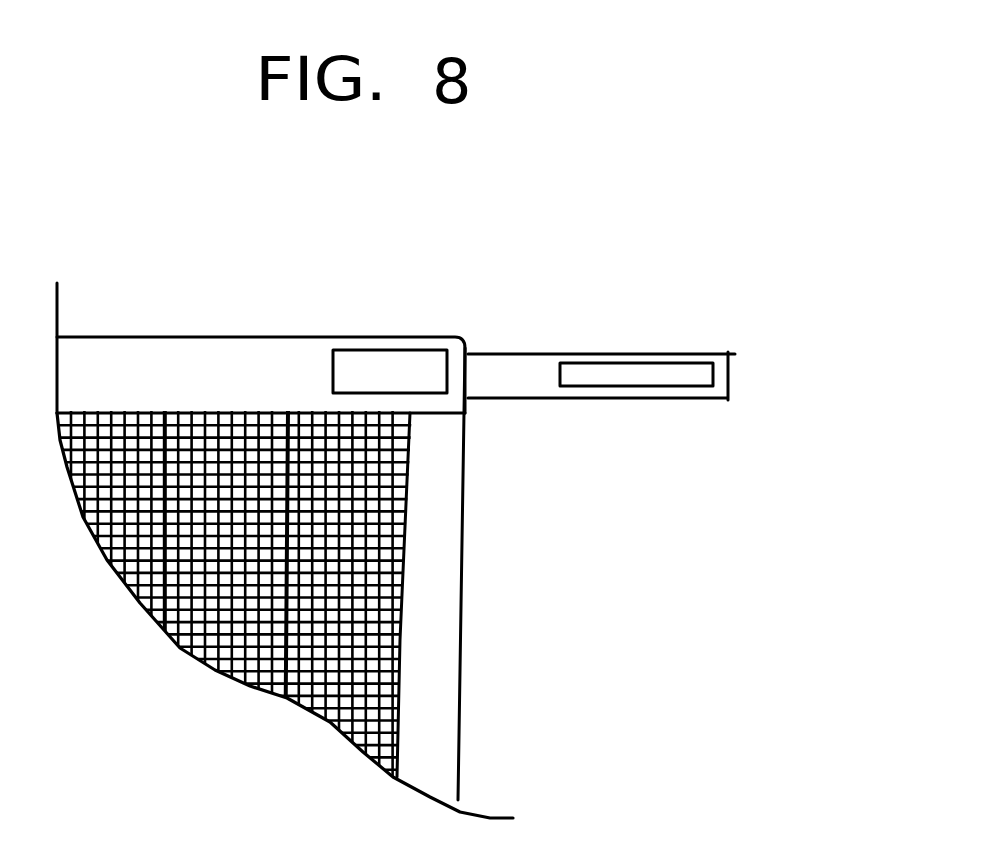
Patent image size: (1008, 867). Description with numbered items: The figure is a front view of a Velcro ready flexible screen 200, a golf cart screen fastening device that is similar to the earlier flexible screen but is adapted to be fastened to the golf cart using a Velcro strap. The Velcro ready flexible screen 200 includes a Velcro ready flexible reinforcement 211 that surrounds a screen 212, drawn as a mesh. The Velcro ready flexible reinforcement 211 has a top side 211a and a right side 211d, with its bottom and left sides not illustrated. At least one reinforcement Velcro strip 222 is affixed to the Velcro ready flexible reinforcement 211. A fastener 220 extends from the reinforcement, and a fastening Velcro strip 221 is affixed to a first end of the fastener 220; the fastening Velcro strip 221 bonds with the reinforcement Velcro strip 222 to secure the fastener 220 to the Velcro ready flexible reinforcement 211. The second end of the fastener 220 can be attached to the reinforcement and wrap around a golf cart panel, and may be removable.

The Velcro ready flexible screen 200 is at (327, 280).
The Velcro ready flexible reinforcement 211 is at (130, 350).
The top side 211a is at (72, 370).
The right side 211d is at (440, 703).
The screen 212 is at (223, 672).
The fastener 220 is at (722, 355).
The fastening Velcro strip 221 is at (670, 377).
The reinforcement Velcro strip 222 is at (380, 367).